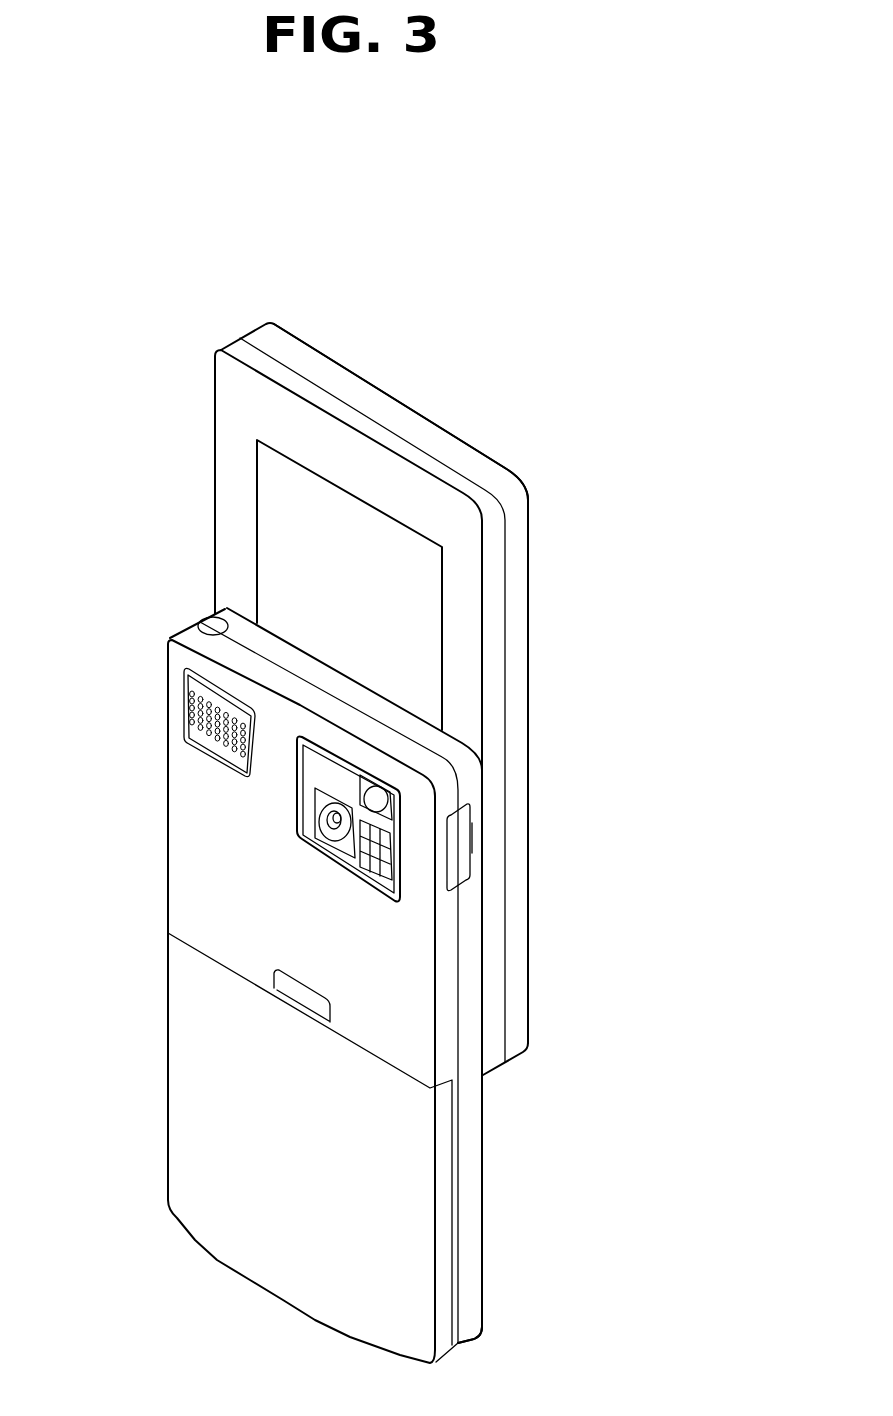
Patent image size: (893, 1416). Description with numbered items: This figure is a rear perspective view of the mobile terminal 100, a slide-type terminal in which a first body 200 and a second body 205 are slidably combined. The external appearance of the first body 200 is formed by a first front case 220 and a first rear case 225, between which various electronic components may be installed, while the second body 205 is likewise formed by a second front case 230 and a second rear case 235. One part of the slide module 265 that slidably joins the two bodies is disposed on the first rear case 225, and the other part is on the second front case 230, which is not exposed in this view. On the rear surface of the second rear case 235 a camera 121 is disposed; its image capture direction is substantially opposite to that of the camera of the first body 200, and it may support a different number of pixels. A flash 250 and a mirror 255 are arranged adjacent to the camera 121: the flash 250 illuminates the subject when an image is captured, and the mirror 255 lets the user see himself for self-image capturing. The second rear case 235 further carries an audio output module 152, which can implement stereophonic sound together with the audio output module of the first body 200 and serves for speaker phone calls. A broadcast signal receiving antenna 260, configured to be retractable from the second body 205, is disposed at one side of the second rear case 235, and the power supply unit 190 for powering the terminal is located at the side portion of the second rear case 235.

The mobile terminal 100 is at (542, 335).
The first body 200 is at (172, 481).
The second body 205 is at (150, 831).
The first front case 220 is at (262, 333).
The first rear case 225 is at (243, 347).
The slide module 265 is at (255, 565).
The broadcast signal receiving antenna 260 is at (212, 626).
The audio output module 152 is at (197, 717).
The flash 250 is at (398, 897).
The camera 121 is at (337, 817).
The mirror 255 is at (377, 800).
The power supply unit 190 is at (183, 1076).
The second rear case 235 is at (447, 1040).
The second front case 230 is at (472, 1107).